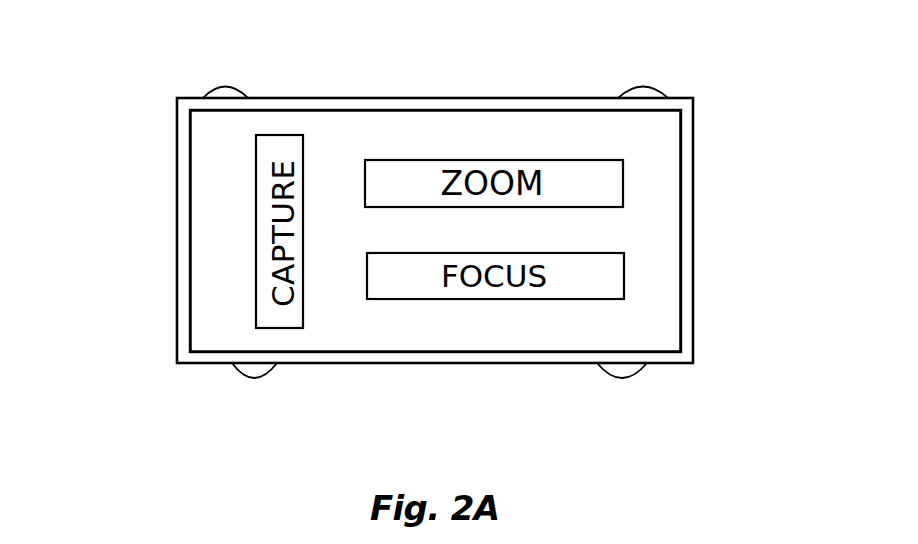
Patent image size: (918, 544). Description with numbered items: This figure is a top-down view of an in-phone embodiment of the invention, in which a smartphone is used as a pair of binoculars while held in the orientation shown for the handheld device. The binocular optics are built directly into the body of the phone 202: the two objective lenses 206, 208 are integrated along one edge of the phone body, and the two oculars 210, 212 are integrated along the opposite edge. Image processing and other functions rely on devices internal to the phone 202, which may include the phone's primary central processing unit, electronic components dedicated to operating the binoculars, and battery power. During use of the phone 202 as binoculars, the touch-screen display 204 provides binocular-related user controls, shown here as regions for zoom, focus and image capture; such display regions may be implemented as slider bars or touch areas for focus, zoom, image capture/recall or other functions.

The phone 202 is at (166, 69).
The touch-screen display 204 is at (397, 125).
The objective lens 206 is at (220, 86).
The objective lens 208 is at (642, 85).
The ocular 210 is at (243, 378).
The ocular 212 is at (627, 376).